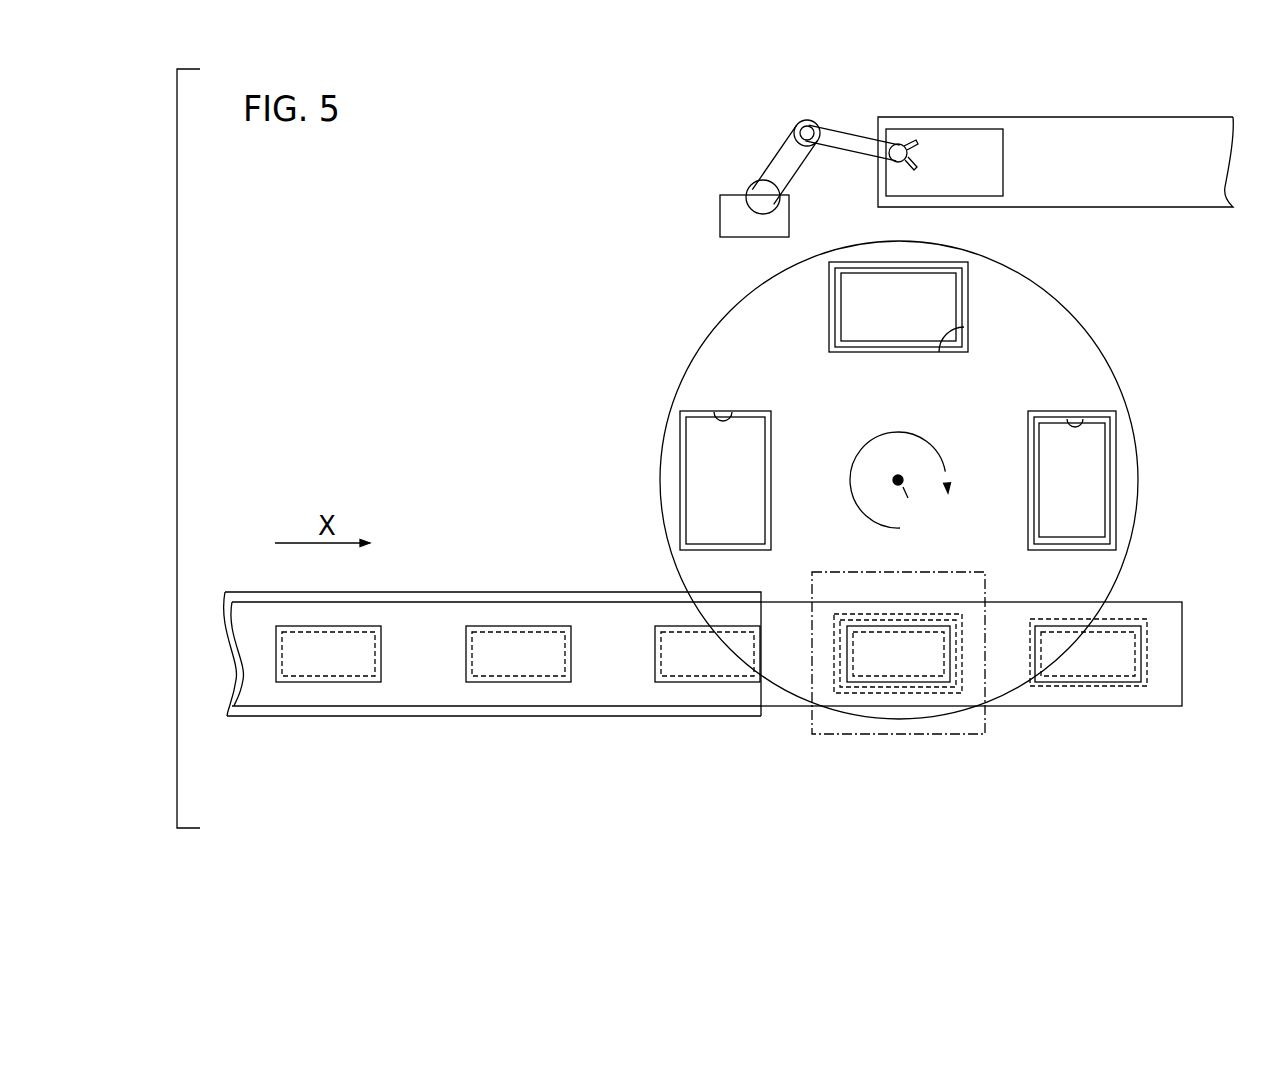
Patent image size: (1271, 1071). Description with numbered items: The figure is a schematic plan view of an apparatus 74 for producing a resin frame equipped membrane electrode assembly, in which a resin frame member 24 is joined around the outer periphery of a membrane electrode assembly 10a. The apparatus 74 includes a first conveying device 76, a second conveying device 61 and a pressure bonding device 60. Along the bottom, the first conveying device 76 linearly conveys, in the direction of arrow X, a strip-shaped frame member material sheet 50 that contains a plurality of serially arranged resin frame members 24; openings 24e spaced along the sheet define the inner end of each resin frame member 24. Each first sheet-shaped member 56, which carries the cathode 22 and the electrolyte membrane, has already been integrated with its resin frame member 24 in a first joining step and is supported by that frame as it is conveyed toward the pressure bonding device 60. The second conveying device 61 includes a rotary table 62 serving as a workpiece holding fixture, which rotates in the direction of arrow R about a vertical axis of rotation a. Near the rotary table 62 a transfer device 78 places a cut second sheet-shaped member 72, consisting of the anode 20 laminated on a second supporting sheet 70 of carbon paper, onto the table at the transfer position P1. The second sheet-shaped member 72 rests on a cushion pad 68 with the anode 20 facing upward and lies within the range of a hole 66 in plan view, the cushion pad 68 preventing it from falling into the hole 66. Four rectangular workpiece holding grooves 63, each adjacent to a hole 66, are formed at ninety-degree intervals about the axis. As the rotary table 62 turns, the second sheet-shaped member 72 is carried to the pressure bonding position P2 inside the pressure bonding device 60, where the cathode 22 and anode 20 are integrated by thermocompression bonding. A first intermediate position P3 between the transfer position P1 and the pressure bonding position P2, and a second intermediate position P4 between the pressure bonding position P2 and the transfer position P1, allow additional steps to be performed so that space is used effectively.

The apparatus 74 is at (374, 198).
The transfer device 78 is at (787, 157).
The second sheet-shaped member 72 is at (1031, 429).
The anode 20 is at (1055, 134).
The second supporting sheet 70 is at (968, 137).
The cathode 22 is at (858, 688).
The second conveying device 61 is at (917, 480).
The rotary table 62 is at (1085, 353).
The cushion pad 68 is at (908, 348).
The hole 66 is at (869, 330).
The workpiece holding groove 63 is at (966, 327).
The first sheet-shaped member 56 is at (855, 625).
The frame member material sheet 50 is at (422, 576).
The membrane electrode assembly 10a is at (1141, 647).
The resin frame member 24 is at (325, 690).
The opening 24e is at (542, 667).
The pressure bonding device 60 is at (985, 740).
The first conveying device 76 is at (250, 562).
The transfer position P1 is at (828, 292).
The pressure bonding position P2 is at (893, 722).
The first intermediate position P3 is at (1118, 452).
The second intermediate position P4 is at (677, 452).